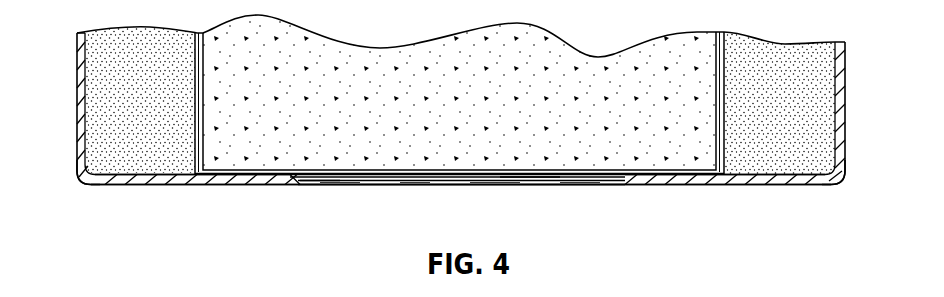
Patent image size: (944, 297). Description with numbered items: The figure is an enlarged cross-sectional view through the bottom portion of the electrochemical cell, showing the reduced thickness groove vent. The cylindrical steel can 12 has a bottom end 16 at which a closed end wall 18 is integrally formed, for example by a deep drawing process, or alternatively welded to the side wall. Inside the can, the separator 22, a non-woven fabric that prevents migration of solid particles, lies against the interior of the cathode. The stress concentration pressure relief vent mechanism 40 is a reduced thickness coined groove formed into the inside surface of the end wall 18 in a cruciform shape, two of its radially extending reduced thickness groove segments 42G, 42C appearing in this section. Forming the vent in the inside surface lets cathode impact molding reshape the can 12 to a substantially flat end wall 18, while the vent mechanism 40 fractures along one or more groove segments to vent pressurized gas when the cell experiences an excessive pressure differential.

The steel can 12 is at (76, 53).
The bottom end 16 is at (84, 181).
The closed end wall 18 is at (673, 187).
The separator 22 is at (725, 58).
The pressure relief vent mechanism 40 is at (385, 187).
The reduced thickness groove segment 42G is at (338, 186).
The reduced thickness groove segment 42C is at (540, 186).